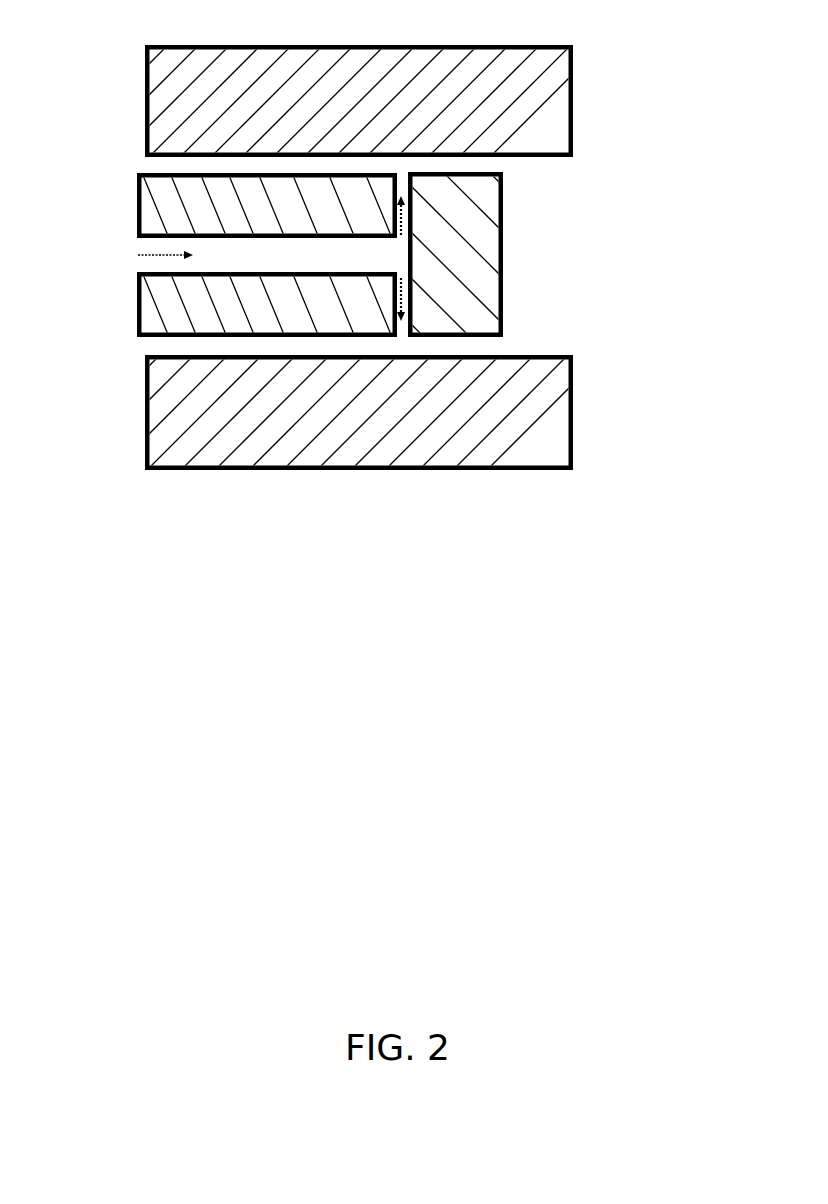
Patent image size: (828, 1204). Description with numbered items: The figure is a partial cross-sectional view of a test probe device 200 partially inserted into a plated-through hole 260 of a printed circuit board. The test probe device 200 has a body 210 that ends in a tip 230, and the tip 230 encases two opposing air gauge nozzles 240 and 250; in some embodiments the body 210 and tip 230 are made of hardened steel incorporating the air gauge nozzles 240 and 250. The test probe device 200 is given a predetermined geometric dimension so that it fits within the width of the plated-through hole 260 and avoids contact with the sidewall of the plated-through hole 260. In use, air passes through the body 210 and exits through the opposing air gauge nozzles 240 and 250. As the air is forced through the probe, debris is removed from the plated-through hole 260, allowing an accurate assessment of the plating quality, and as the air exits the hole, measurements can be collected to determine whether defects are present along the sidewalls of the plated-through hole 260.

The test probe device 200 is at (648, 167).
The body 210 is at (137, 203).
The tip 230 is at (503, 258).
The air gauge nozzle 240 is at (396, 158).
The air gauge nozzle 250 is at (396, 347).
The plated-through hole 260 is at (573, 100).